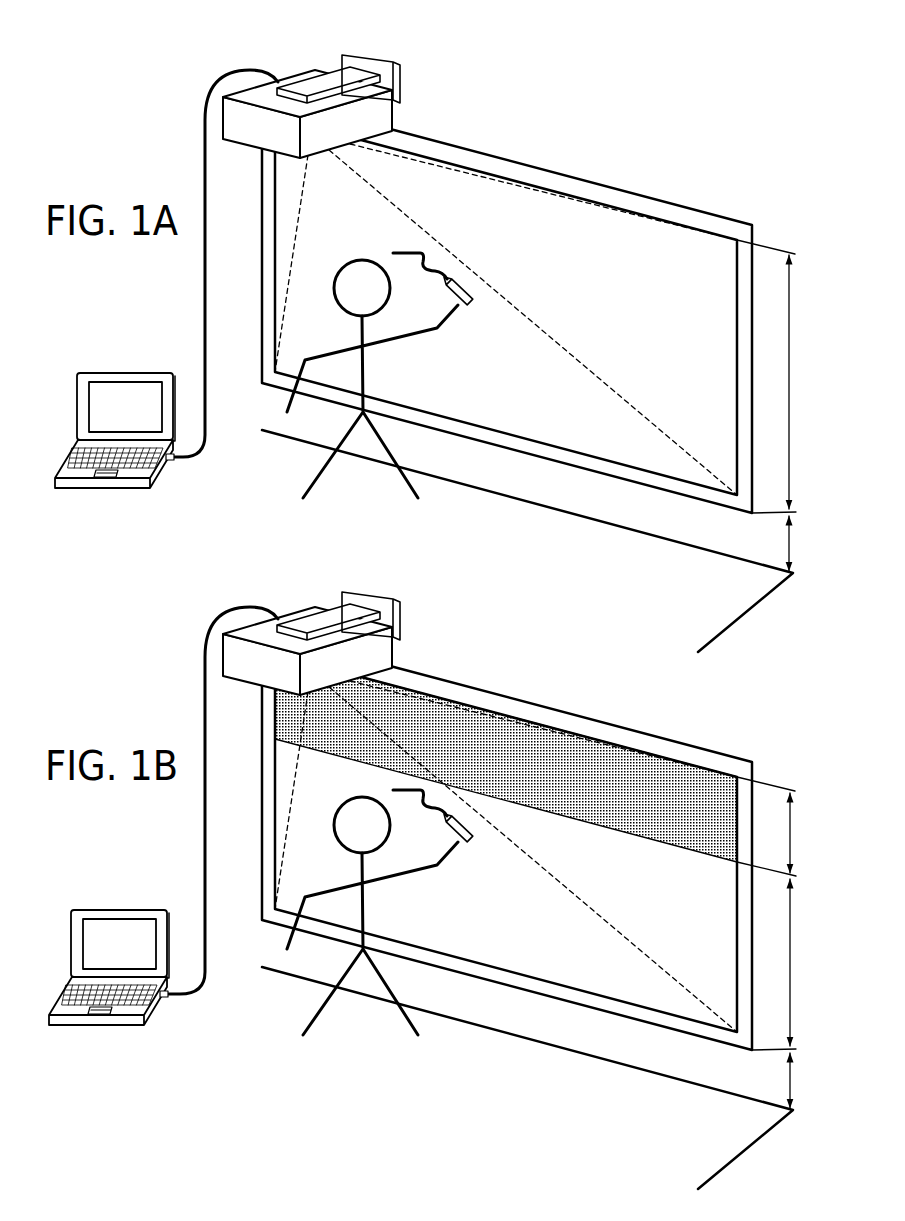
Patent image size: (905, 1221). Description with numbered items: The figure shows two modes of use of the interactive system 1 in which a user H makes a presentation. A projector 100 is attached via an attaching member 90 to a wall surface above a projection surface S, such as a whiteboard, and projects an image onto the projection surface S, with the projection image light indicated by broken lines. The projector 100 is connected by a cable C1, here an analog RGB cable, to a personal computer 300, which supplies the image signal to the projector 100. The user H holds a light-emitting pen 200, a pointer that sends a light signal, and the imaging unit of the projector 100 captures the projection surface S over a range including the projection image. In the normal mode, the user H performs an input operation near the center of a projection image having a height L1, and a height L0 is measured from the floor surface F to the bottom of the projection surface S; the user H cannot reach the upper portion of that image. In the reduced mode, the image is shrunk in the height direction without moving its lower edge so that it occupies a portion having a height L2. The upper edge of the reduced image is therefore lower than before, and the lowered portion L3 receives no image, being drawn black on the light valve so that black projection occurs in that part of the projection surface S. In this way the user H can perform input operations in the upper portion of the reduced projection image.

In FIG. 1A, the interactive system 1 is at (550, 127).
In FIG. 1B, the interactive system 1 is at (507, 830).
In FIG. 1A, the attaching member 90 is at (370, 63).
In FIG. 1B, the attaching member 90 is at (371, 594).
In FIG. 1A, the projector 100 is at (290, 80).
In FIG. 1B, the projector 100 is at (307, 628).
In FIG. 1A, the light-emitting pen 200 is at (470, 307).
In FIG. 1B, the light-emitting pen 200 is at (443, 846).
In FIG. 1A, the personal computer 300 is at (102, 483).
In FIG. 1B, the personal computer 300 is at (109, 996).
In FIG. 1A, the cable C1 is at (195, 453).
In FIG. 1B, the cable C1 is at (219, 826).
In FIG. 1A, the user H is at (360, 417).
In FIG. 1B, the user H is at (372, 916).
In FIG. 1A, the projection surface S is at (533, 410).
In FIG. 1B, the projection surface S is at (506, 844).
In FIG. 1A, the floor surface F is at (698, 615).
In FIG. 1B, the floor surface F is at (536, 1078).
In FIG. 1A, the height of the projection image L1 is at (780, 376).
In FIG. 1A, the height from floor surface to bottom of projection surface L0 is at (806, 543).
In FIG. 1B, the height from floor surface to bottom of projection surface L0 is at (807, 1080).
In FIG. 1B, the height of the reduced projection image L2 is at (789, 964).
In FIG. 1B, the lowered top portion L3 is at (781, 826).